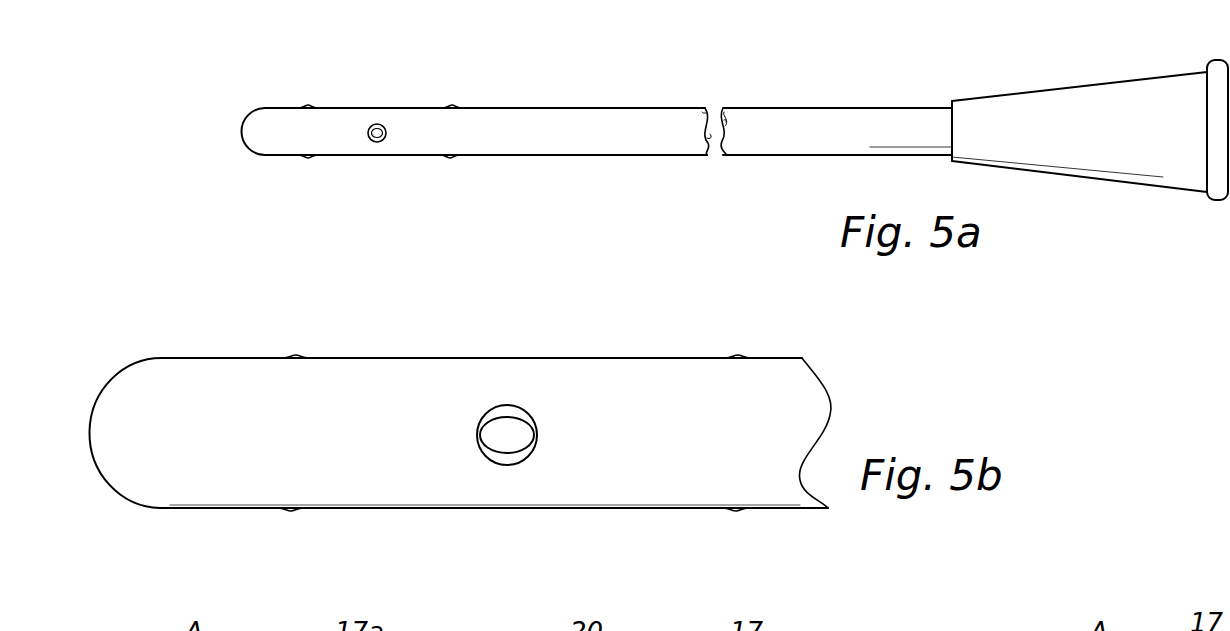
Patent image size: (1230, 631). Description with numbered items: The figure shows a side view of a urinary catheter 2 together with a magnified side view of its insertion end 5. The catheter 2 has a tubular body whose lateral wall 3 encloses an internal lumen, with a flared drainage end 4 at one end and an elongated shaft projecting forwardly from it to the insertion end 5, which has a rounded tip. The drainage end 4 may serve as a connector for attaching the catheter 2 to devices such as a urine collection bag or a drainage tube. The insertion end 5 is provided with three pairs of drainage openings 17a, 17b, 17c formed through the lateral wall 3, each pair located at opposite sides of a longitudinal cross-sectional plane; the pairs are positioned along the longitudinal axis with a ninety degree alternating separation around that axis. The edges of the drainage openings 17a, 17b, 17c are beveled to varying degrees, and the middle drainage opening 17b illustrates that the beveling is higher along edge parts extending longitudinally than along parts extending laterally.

In FIG. 5A, the catheter 2 is at (885, 78).
In FIG. 5A, the lateral wall 3 is at (574, 132).
In FIG. 5A, the drainage end 4 is at (1103, 218).
In FIG. 5A, the insertion end 5 is at (240, 152).
In FIG. 5B, the insertion end 5 is at (146, 313).
In FIG. 5A, the drainage opening 17a is at (308, 107).
In FIG. 5B, the drainage opening 17a is at (296, 357).
In FIG. 5A, the drainage opening 17b is at (377, 124).
In FIG. 5B, the drainage opening 17b is at (509, 430).
In FIG. 5A, the drainage opening 17c is at (452, 107).
In FIG. 5B, the drainage opening 17c is at (737, 357).